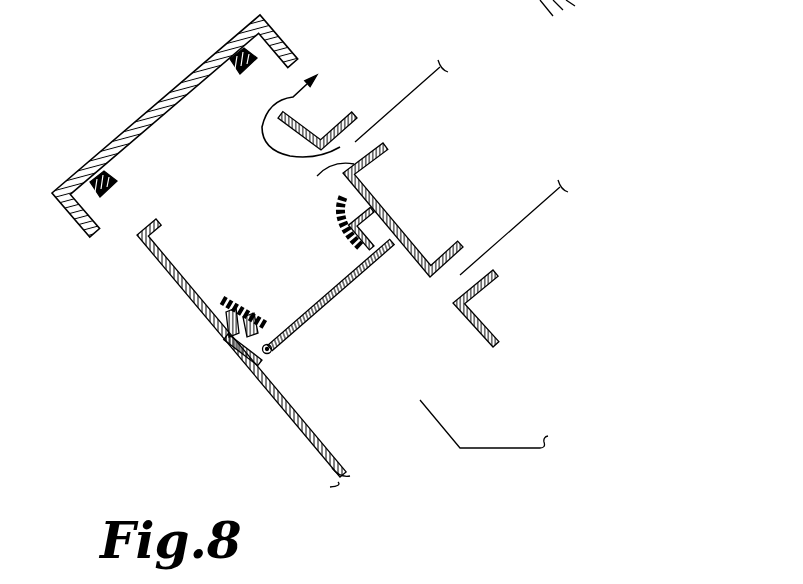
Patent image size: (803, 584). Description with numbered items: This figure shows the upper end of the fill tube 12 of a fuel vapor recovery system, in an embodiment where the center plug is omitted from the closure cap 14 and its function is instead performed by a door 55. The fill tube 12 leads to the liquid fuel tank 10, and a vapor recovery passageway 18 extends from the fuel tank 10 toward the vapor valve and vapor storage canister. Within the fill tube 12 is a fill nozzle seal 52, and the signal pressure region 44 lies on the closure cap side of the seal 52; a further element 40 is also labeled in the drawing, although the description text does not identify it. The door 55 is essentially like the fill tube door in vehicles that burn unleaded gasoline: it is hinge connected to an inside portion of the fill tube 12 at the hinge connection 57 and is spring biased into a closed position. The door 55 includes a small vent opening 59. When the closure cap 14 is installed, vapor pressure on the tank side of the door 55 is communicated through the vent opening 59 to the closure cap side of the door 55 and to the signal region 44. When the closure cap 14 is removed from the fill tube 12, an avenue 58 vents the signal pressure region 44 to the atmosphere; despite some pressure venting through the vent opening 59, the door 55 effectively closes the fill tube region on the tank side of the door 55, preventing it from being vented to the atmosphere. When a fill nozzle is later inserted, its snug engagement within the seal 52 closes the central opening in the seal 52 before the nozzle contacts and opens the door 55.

The liquid fuel tank 10 is at (555, 430).
The fill tube 12 is at (307, 442).
The closure cap 14 is at (168, 97).
The vapor recovery passageway 18 is at (532, 218).
The latch member 40 is at (406, 101).
The signal pressure region 44 is at (356, 173).
The fill nozzle seal 52 is at (222, 318).
The door 55 is at (272, 349).
The hinge connection 57 is at (253, 370).
The avenue 58 is at (281, 83).
The vent opening 59 is at (330, 300).